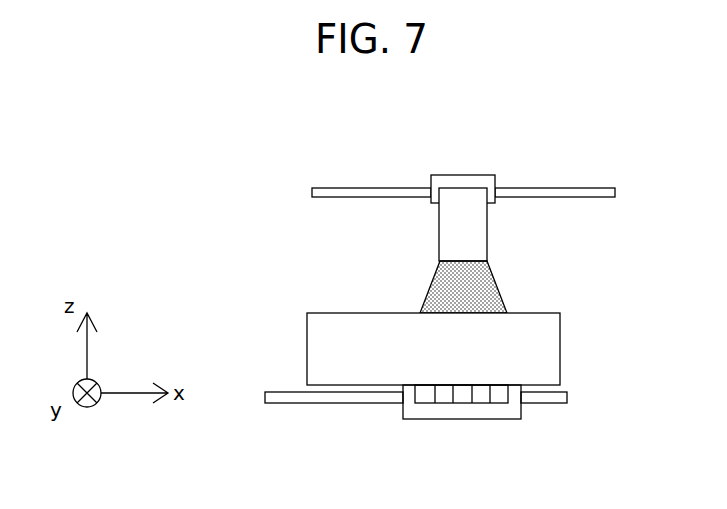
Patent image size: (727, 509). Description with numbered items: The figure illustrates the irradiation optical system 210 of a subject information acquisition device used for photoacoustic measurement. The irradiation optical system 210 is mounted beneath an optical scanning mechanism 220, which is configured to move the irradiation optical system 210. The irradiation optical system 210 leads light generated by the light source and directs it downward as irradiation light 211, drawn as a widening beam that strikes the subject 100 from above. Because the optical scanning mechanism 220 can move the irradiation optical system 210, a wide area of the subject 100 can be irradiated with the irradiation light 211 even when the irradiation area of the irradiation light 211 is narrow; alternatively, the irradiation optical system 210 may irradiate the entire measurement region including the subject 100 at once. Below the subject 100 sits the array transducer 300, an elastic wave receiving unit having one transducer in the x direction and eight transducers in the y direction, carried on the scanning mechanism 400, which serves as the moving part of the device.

The subject 100 is at (555, 353).
The irradiation optical system 210 is at (482, 232).
The irradiation light 211 is at (433, 300).
The optical scanning mechanism 220 is at (445, 181).
The array transducer 300 is at (500, 398).
The scanning mechanism 400 is at (317, 398).